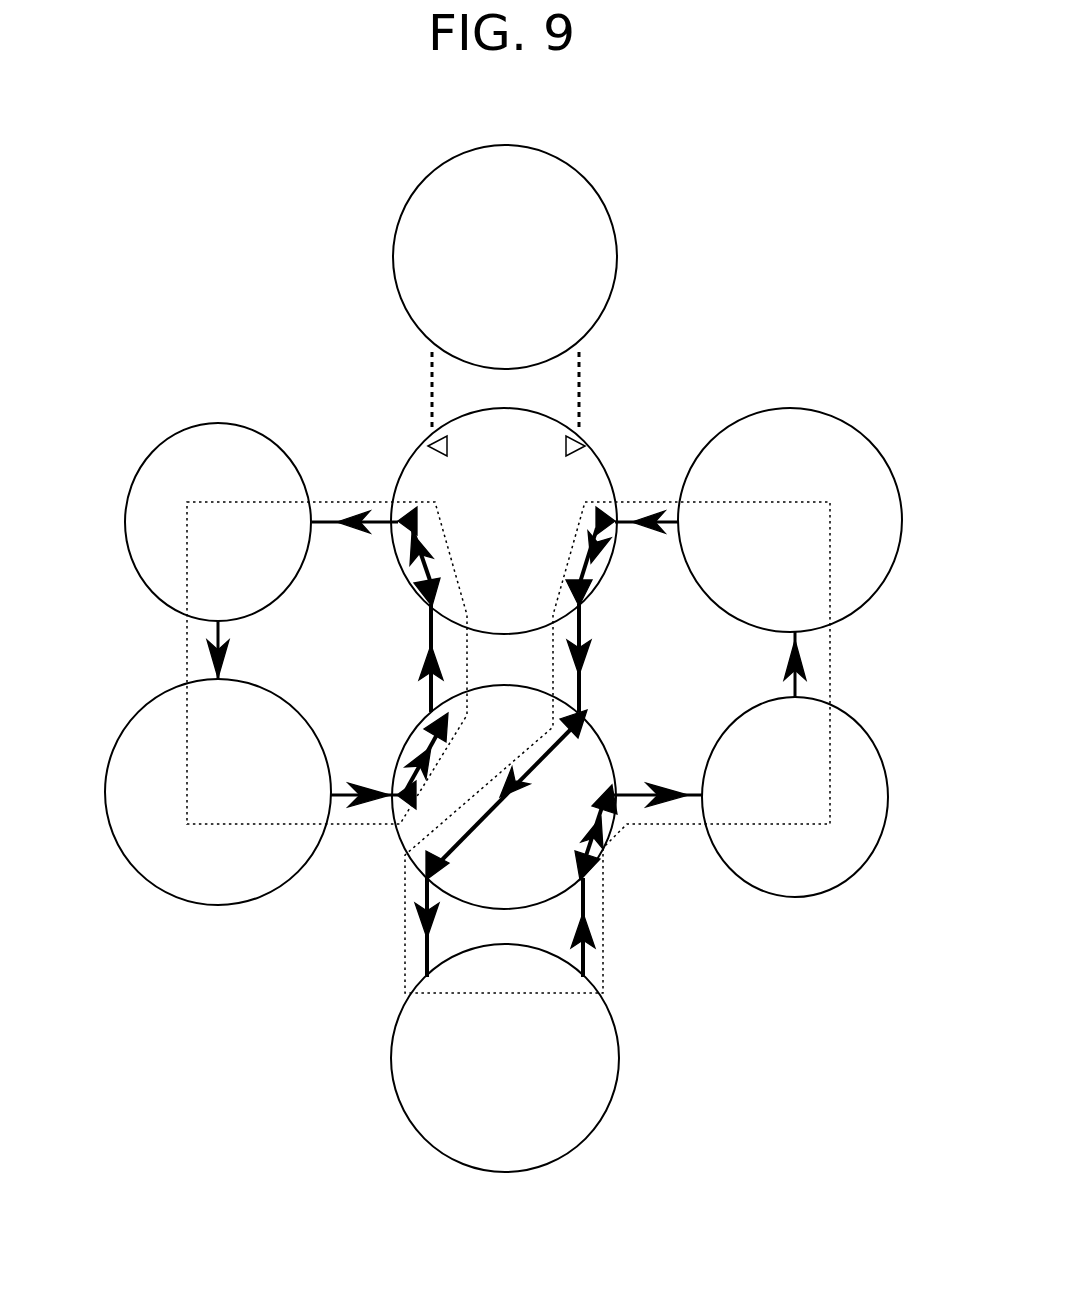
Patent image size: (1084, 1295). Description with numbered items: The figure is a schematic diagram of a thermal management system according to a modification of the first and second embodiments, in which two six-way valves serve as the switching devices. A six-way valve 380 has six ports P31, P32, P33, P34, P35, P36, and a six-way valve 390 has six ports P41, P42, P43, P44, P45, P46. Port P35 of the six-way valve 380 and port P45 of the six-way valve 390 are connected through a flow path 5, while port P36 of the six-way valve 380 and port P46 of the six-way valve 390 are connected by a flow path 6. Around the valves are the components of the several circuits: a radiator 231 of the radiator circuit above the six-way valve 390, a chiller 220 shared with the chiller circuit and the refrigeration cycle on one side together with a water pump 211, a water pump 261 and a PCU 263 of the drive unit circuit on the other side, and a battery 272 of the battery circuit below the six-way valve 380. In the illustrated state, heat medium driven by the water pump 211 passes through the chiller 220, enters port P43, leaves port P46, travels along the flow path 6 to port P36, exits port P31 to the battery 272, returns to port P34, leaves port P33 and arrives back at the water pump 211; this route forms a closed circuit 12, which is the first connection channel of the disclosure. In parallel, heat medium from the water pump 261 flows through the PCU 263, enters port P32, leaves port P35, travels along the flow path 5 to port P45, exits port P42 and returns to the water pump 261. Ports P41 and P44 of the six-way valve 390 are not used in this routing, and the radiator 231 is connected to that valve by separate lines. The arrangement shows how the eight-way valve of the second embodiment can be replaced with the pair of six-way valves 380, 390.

The radiator 231 is at (586, 178).
The six-way valve 390 is at (485, 408).
The six-way valve 380 is at (483, 684).
The battery 272 is at (620, 1028).
The water pump 261 is at (182, 428).
The PCU 263 is at (118, 733).
The chiller 220 is at (871, 437).
The water pump 211 is at (887, 768).
The closed circuit 12 is at (719, 492).
The flow path 5 is at (424, 636).
The flow path 6 is at (586, 630).
The port P31 is at (425, 872).
The port P32 is at (400, 824).
The port P33 is at (613, 828).
The port P34 is at (592, 878).
The port P35 is at (412, 731).
The port P36 is at (592, 742).
The port P41 is at (600, 459).
The port P42 is at (410, 503).
The port P43 is at (607, 497).
The port P44 is at (422, 459).
The port P45 is at (422, 601).
The port P46 is at (588, 606).